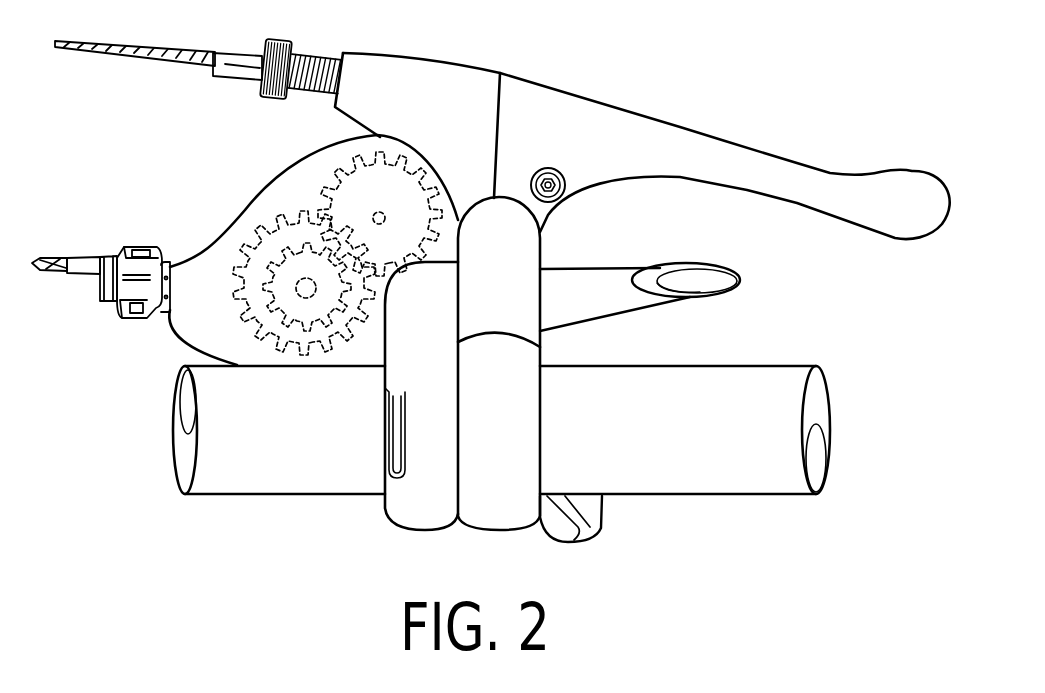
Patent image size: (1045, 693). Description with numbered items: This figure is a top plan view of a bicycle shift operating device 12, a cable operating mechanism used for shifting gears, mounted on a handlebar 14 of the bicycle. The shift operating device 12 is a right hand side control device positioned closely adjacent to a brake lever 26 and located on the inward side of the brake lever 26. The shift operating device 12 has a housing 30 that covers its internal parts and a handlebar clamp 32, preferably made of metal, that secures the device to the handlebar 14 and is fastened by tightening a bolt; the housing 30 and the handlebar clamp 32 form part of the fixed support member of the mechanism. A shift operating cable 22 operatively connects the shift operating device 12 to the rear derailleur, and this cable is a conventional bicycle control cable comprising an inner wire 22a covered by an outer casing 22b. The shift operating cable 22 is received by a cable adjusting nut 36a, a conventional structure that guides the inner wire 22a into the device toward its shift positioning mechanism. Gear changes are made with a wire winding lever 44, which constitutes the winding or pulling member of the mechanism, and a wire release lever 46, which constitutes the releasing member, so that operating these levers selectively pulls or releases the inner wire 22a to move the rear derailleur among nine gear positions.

The bicycle shift operating device 12 is at (171, 183).
The handlebar 14 is at (681, 497).
The shift operating cable 22 is at (100, 297).
The inner wire 22a is at (45, 273).
The outer casing 22b is at (75, 274).
The brake lever 26 is at (574, 95).
The housing 30 is at (273, 173).
The handlebar clamp 32 is at (388, 443).
The cable adjusting nut 36a is at (128, 332).
The wire winding lever 44 is at (597, 538).
The wire release lever 46 is at (710, 301).